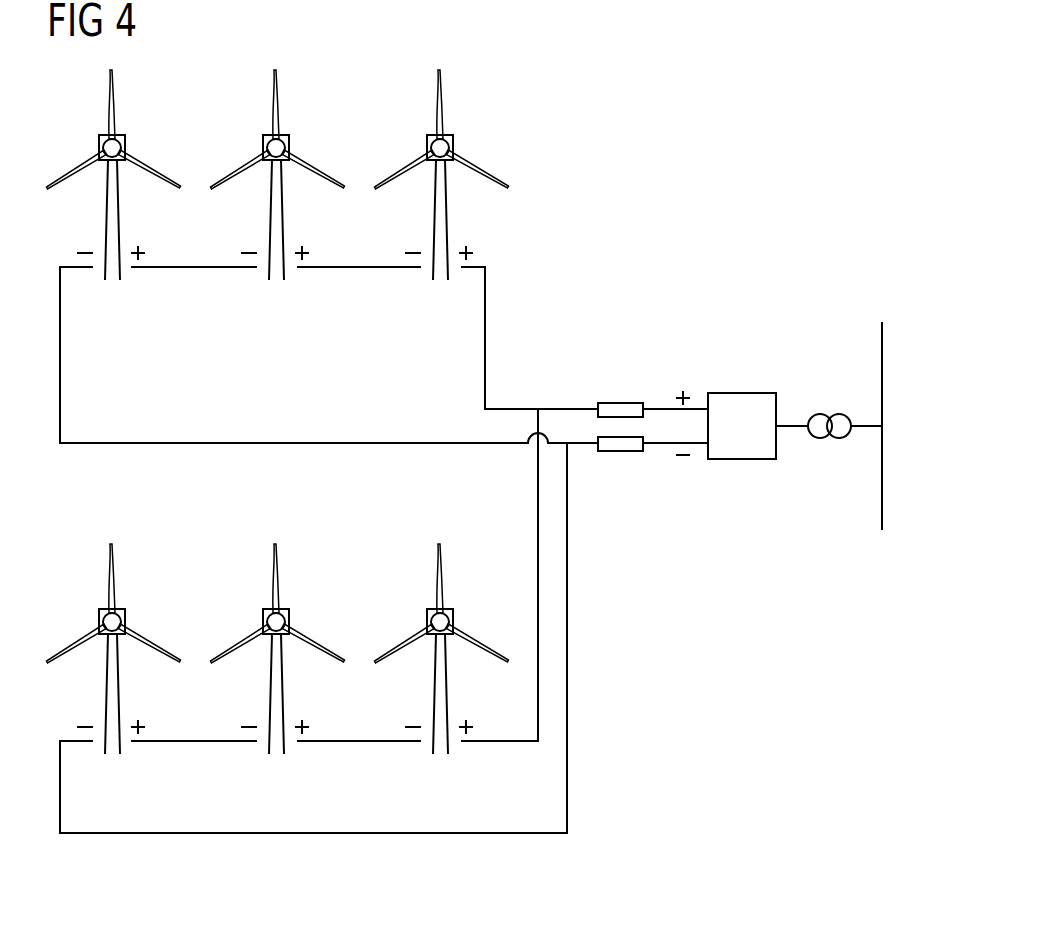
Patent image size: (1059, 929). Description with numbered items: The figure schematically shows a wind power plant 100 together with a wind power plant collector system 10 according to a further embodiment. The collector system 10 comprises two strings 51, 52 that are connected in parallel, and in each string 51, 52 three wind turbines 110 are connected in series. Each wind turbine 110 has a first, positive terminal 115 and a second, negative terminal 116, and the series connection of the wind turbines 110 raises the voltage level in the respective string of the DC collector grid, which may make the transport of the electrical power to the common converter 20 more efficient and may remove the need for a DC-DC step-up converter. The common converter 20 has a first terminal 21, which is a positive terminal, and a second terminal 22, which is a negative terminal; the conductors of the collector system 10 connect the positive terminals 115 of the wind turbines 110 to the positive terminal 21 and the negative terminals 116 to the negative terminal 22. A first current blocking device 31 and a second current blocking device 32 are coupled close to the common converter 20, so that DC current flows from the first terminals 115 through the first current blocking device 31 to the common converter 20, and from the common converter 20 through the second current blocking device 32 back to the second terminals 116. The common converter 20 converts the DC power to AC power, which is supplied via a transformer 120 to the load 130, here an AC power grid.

The wind power plant collector system 10 is at (622, 577).
The common converter 20 is at (743, 392).
The first terminal 21 is at (707, 405).
The second terminal 22 is at (707, 452).
The first current blocking device 31 is at (622, 402).
The second current blocking device 32 is at (622, 452).
The first string 51 is at (533, 70).
The second string 52 is at (593, 678).
The wind power plant 100 is at (733, 120).
The wind turbine 110 is at (116, 95).
The first terminal 115 is at (468, 268).
The second terminal 116 is at (414, 268).
The transformer 120 is at (838, 442).
The load 130 is at (882, 337).